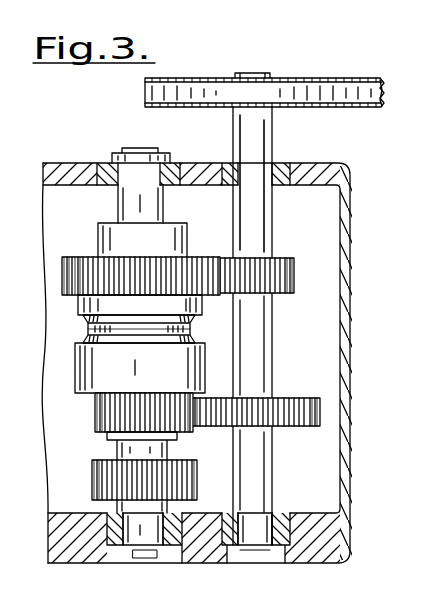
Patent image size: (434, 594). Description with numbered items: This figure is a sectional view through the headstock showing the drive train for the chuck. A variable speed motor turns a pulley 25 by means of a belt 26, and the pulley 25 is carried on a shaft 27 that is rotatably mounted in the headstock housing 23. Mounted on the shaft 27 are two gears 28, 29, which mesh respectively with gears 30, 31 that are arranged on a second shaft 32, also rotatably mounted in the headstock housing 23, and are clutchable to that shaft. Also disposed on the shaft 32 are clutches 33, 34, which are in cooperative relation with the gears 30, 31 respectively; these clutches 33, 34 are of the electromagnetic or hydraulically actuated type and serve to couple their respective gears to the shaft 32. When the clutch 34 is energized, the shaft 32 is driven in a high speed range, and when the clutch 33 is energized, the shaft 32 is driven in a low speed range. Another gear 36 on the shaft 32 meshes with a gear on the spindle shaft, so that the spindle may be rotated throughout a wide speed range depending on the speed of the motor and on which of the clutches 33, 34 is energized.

The headstock housing 23 is at (349, 186).
The pulley 25 is at (327, 79).
The belt 26 is at (371, 83).
The shaft 27 is at (258, 222).
The gear 28 is at (277, 276).
The gear 29 is at (291, 404).
The gear 30 is at (84, 272).
The gear 31 is at (115, 411).
The shaft 32 is at (146, 209).
The clutch 33 is at (77, 306).
The clutch 34 is at (93, 372).
The gear 36 is at (112, 475).